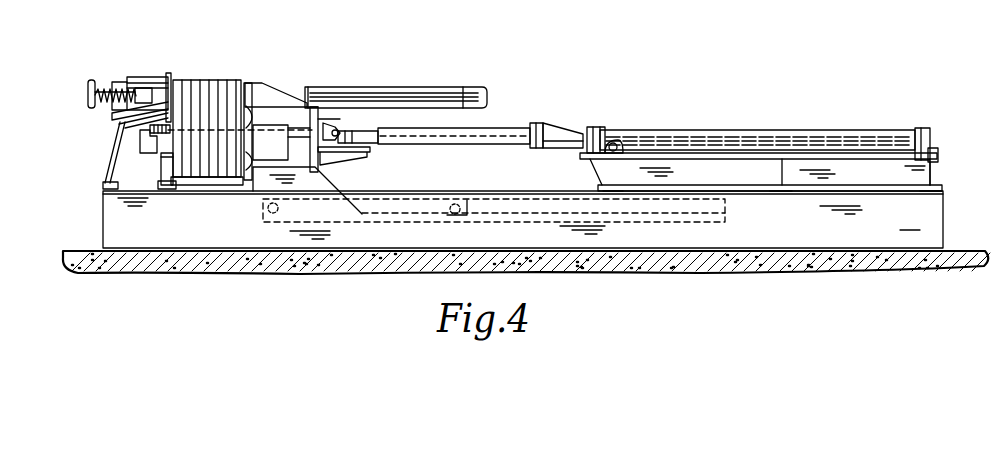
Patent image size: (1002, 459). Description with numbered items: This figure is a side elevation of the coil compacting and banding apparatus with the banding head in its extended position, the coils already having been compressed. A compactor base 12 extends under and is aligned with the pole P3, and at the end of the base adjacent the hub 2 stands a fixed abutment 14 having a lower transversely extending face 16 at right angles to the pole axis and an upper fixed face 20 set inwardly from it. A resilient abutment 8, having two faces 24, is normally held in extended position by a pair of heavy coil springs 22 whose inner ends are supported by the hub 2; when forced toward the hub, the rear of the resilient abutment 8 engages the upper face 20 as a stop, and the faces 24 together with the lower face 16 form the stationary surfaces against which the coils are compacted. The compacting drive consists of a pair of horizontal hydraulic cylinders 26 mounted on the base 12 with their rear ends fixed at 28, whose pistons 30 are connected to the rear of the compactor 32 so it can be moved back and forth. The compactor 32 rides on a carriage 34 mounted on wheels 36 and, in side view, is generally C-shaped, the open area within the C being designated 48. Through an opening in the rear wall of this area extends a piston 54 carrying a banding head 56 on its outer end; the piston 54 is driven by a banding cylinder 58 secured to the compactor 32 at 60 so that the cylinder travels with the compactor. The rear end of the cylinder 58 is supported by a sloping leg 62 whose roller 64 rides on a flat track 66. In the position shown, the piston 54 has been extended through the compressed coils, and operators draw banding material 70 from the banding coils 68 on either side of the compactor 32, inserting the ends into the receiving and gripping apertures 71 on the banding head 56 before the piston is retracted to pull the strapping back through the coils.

The hub 2 is at (91, 80).
The heavy coil springs 22 is at (106, 90).
The resilient abutment 8 is at (168, 73).
The faces of resilient abutment 24 is at (177, 95).
The banding material 70 is at (195, 130).
The compactor 32 is at (278, 95).
The piston 54 is at (283, 125).
The open area 48 is at (270, 142).
The cylinder securing point 60 is at (337, 122).
The banding coils 68 is at (367, 130).
The pole P3 is at (429, 88).
The pistons 30 is at (492, 146).
The banding cylinder 58 is at (520, 123).
The sloping leg 62 is at (552, 123).
The roller 64 is at (618, 140).
The flat track 66 is at (677, 153).
The horizontal hydraulic cylinders 26 is at (775, 130).
The rear end fixing 28 is at (928, 142).
The wheels 36 is at (262, 208).
The carriage 34 is at (335, 172).
The compactor base 12 is at (108, 223).
The fixed abutment 14 is at (117, 177).
The upper fixed face 20 is at (148, 121).
The receiving and gripping apertures 71 is at (150, 136).
The banding head 56 is at (143, 152).
The lower transversely extending face 16 is at (172, 165).